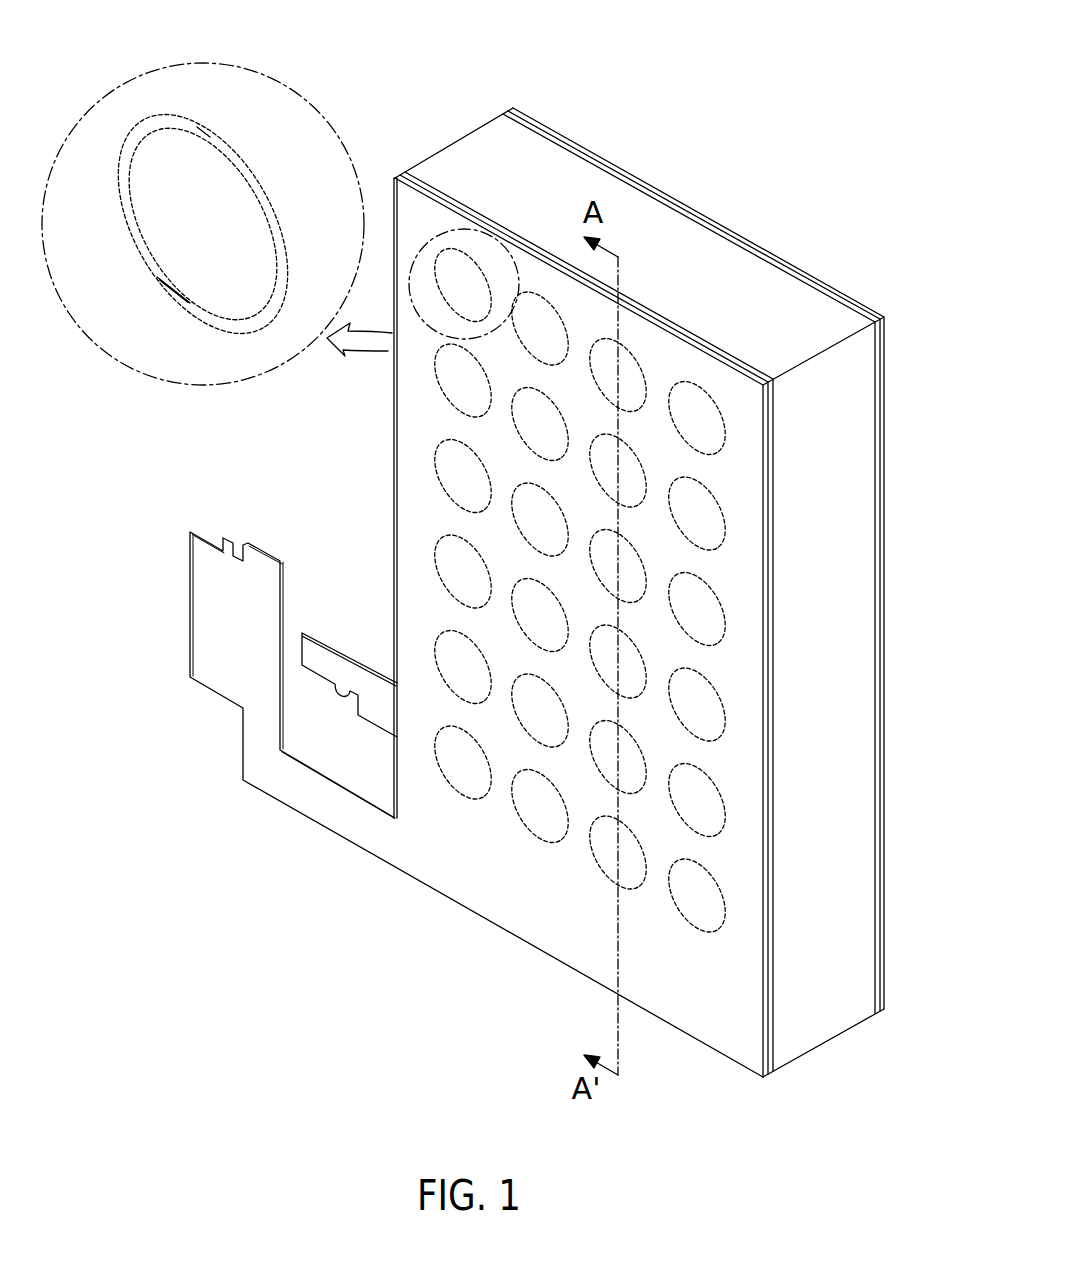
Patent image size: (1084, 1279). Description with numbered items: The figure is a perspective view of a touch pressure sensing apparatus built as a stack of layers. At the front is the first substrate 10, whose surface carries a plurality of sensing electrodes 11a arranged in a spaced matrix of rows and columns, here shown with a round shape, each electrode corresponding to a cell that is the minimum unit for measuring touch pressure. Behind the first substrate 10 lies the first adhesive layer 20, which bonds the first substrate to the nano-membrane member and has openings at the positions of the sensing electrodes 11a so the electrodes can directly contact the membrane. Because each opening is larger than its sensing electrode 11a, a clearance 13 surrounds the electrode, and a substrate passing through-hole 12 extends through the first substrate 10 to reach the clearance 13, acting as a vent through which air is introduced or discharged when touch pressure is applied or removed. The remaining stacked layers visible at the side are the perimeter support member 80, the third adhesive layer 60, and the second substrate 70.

The first substrate 10 is at (763, 1078).
The first adhesive layer 20 is at (770, 1080).
The perimeter support member 80 is at (820, 1047).
The third adhesive layer 60 is at (884, 1012).
The second substrate 70 is at (888, 1012).
The clearance 13 is at (243, 163).
The sensing electrode 11a is at (193, 201).
The substrate passing through-hole 12 is at (203, 307).